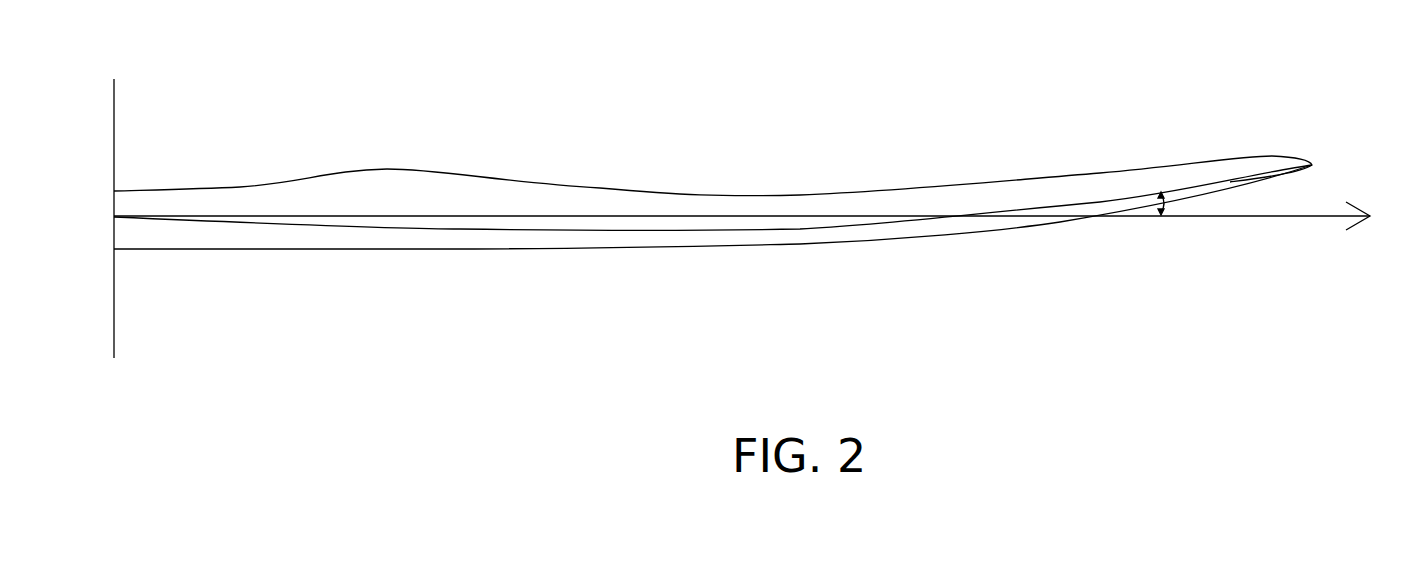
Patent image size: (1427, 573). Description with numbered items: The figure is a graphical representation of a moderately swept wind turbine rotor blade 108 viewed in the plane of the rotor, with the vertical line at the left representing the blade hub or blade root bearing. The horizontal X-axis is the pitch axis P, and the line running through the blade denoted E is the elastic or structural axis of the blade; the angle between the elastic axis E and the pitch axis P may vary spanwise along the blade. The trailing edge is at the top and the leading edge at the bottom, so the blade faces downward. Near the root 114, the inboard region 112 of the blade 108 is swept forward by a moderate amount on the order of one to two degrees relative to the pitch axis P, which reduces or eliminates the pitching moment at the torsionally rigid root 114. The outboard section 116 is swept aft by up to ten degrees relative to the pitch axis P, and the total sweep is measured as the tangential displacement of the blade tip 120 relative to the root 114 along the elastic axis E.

The rotor blade 108 is at (731, 143).
The inboard region 112 is at (240, 187).
The blade root 114 is at (127, 188).
The outboard section 116 is at (1002, 180).
The blade tip 120 is at (1312, 163).
The elastic axis E is at (1197, 185).
The pitch axis P is at (752, 216).